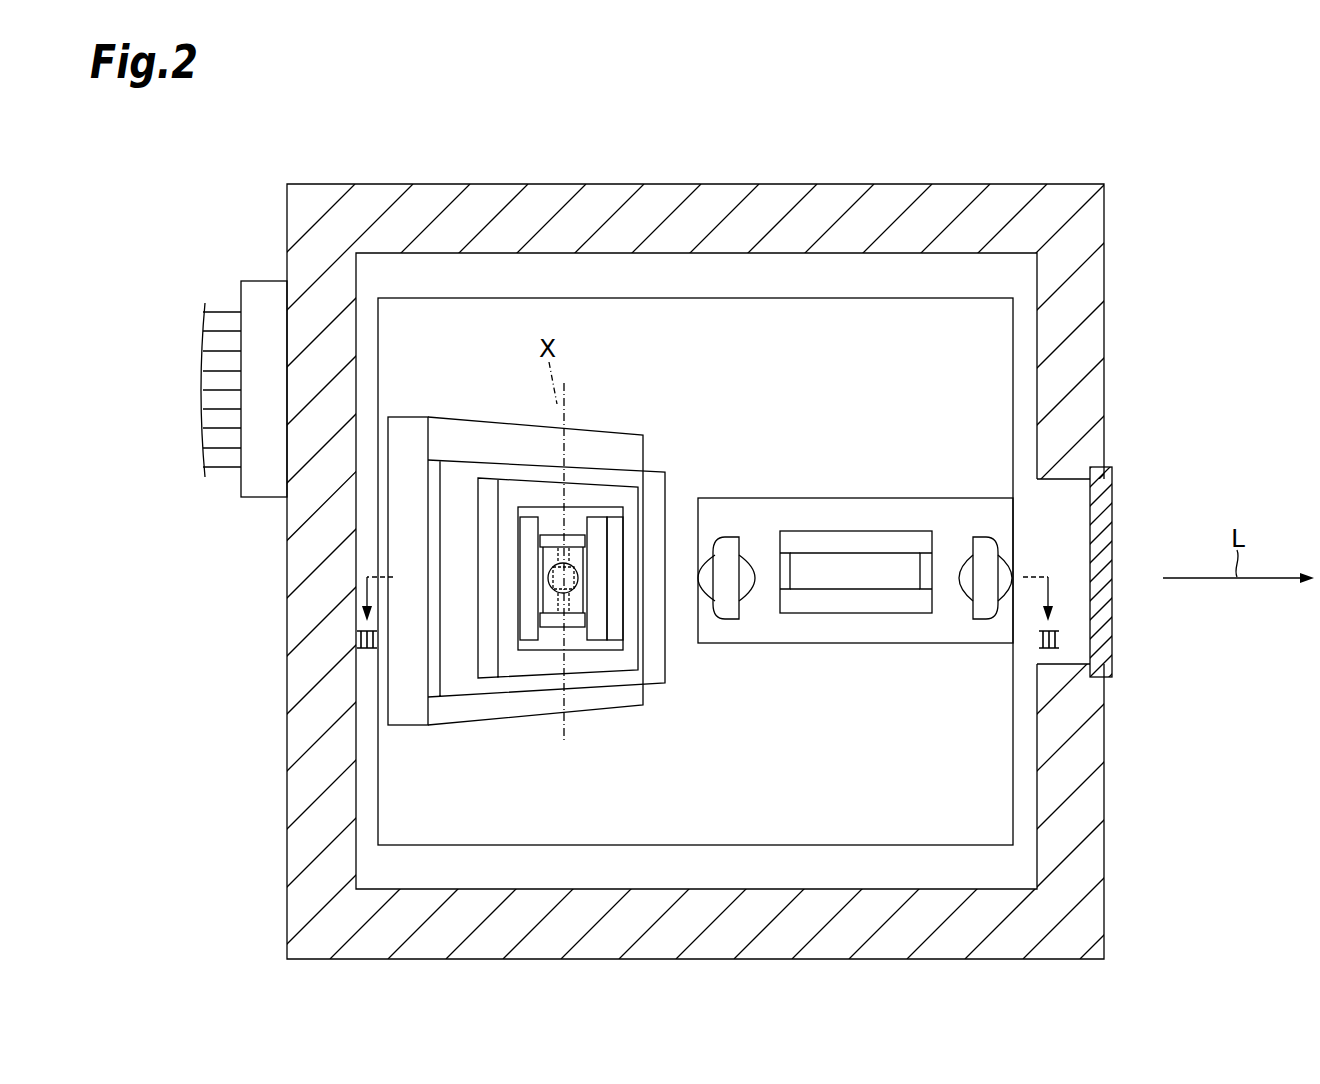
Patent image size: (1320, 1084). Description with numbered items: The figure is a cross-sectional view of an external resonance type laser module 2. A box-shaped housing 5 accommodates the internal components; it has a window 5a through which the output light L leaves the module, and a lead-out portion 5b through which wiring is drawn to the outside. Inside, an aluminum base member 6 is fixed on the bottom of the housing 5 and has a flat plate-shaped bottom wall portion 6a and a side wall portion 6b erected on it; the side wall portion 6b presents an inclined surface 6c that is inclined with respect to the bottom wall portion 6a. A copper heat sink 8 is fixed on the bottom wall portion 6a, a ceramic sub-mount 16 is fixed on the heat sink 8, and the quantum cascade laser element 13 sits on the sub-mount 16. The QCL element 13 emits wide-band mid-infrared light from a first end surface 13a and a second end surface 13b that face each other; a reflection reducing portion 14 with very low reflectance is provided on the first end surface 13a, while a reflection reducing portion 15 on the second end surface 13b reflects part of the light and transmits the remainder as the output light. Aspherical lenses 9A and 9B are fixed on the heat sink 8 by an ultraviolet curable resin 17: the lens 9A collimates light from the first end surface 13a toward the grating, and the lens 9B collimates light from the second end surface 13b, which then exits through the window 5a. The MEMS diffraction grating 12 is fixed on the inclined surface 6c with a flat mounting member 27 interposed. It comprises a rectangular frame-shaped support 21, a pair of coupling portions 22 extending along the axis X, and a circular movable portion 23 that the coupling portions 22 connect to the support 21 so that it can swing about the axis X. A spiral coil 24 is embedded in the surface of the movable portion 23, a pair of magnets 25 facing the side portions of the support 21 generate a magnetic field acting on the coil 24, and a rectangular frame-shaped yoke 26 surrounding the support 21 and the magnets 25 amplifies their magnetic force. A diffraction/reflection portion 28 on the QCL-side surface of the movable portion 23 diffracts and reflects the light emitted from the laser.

The laser module 2 is at (1086, 170).
The housing 5 is at (728, 200).
The window 5a is at (1100, 487).
The lead-out portion 5b is at (258, 281).
The base member 6 is at (585, 298).
The bottom wall portion 6a is at (848, 317).
The side wall portion 6b is at (407, 417).
The inclined surface 6c is at (462, 440).
The heat sink 8 is at (962, 497).
The lens 9A is at (728, 535).
The lens 9B is at (985, 535).
The MEMS diffraction grating 12 is at (572, 573).
The quantum cascade laser element 13 is at (873, 553).
The first end surface 13a is at (787, 560).
The second end surface 13b is at (927, 558).
The reflection reducing portion 14 is at (783, 600).
The reflection reducing portion 15 is at (924, 600).
The sub-mount 16 is at (857, 612).
The ultraviolet curable resin 17 is at (724, 620).
The support 21 is at (557, 643).
The coupling portion 22 is at (581, 540).
The movable portion 23 is at (541, 627).
The coil 24 is at (552, 548).
The magnet 25 is at (525, 650).
The yoke 26 is at (630, 490).
The mounting member 27 is at (668, 668).
The diffraction/reflection portion 28 is at (590, 563).